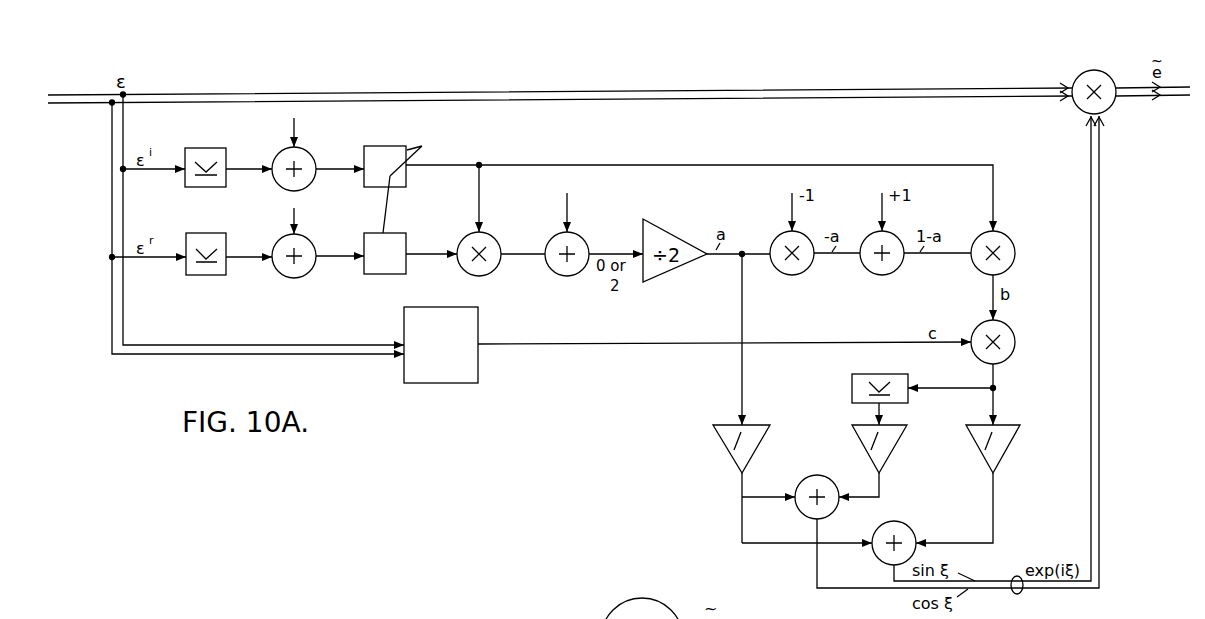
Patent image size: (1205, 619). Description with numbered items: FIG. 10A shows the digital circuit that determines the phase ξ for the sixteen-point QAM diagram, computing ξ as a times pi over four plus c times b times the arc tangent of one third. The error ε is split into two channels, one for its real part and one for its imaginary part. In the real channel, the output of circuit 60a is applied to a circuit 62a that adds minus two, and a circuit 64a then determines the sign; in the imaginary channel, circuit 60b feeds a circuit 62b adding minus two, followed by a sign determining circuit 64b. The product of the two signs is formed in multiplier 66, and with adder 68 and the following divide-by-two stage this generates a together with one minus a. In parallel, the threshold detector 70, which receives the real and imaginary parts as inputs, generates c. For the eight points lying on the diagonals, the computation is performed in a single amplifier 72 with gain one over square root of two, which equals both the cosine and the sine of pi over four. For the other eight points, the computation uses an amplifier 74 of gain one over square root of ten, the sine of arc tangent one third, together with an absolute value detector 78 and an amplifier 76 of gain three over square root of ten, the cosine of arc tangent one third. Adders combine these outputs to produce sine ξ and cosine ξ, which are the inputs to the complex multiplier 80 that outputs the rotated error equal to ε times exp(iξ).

The absolute value circuit 60a is at (226, 236).
The absolute value circuit 60b is at (226, 150).
The adder circuit 62a is at (313, 246).
The adder circuit 62b is at (311, 152).
The sign determining circuit 64a is at (406, 240).
The sign determining circuit 64b is at (406, 183).
The sign product multiplier 66 is at (500, 243).
The adder 68 is at (586, 243).
The threshold detector 70 is at (478, 319).
The amplifier 72 is at (765, 450).
The amplifier 74 is at (1000, 423).
The amplifier 76 is at (898, 451).
The absolute value detector 78 is at (908, 379).
The complex multiplier 80 is at (1111, 80).